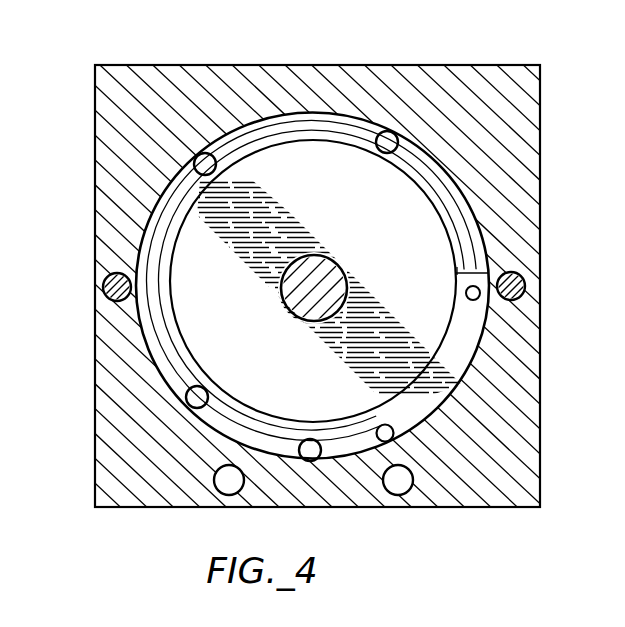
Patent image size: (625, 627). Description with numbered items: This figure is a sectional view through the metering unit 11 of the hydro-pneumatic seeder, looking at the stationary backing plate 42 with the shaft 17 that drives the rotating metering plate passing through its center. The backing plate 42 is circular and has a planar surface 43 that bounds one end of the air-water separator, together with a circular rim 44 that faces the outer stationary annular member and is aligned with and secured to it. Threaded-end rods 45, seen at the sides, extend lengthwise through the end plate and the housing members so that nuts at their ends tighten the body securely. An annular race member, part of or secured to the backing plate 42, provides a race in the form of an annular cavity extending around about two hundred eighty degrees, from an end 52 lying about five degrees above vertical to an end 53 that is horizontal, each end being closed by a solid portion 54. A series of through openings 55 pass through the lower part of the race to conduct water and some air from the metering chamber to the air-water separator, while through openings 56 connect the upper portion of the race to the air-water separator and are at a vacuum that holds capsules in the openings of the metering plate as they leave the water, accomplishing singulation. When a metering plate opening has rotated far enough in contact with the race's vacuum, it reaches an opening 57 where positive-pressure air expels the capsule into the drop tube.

The metering unit 11 is at (383, 50).
The shaft 17 is at (318, 272).
The backing plate 42 is at (306, 195).
The planar surface 43 is at (213, 330).
The circular rim 44 is at (442, 362).
The threaded-end rods 45 is at (105, 287).
The end 52 is at (384, 425).
The end 53 is at (455, 272).
The solid portion 54 is at (460, 325).
The through openings 55 is at (203, 388).
The through openings 56 is at (212, 173).
The opening 57 is at (466, 293).